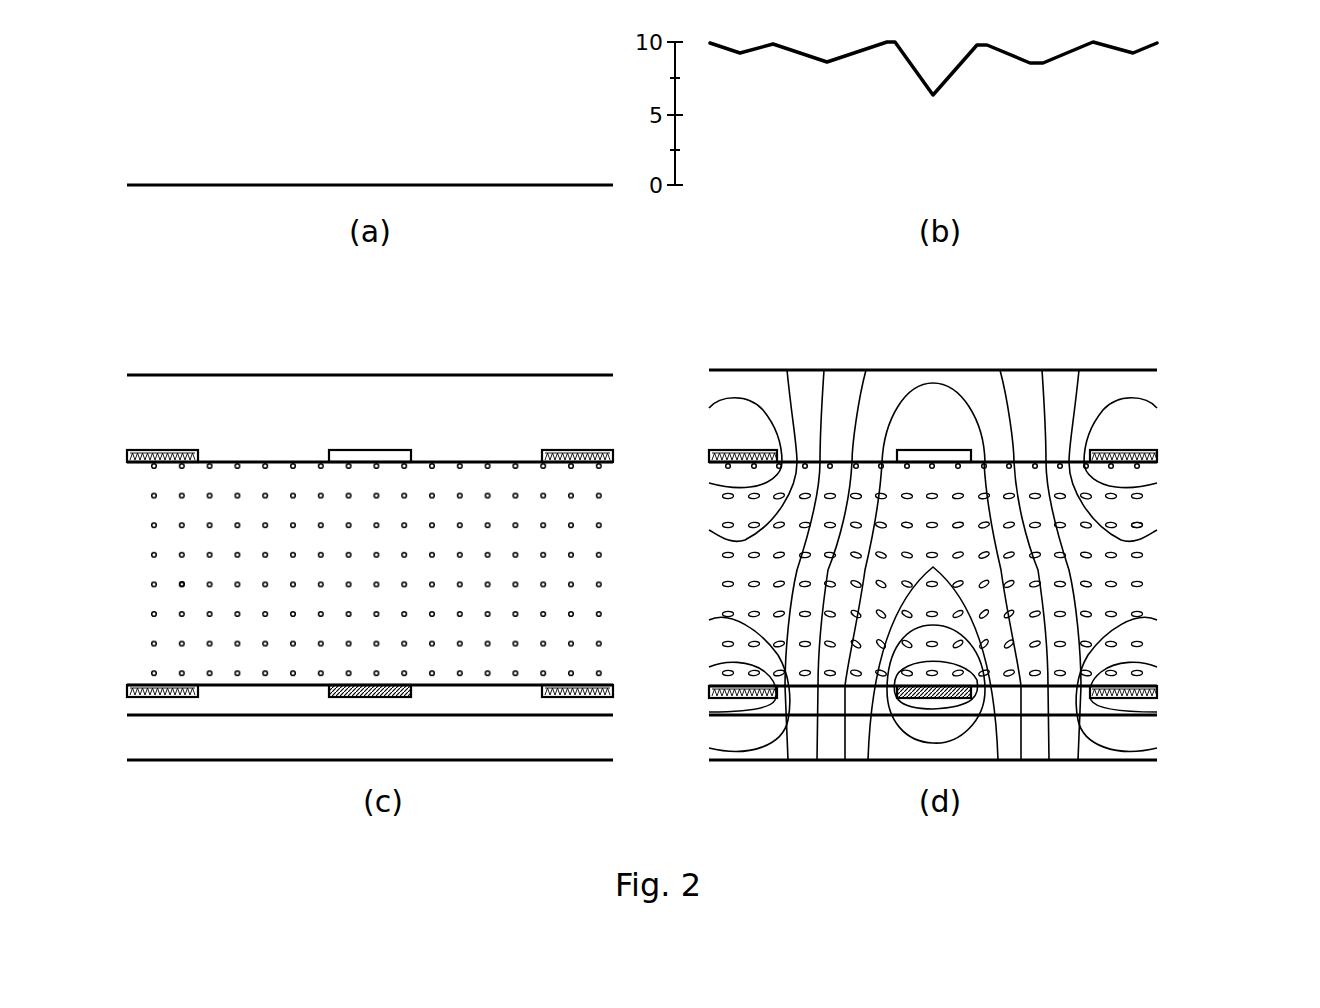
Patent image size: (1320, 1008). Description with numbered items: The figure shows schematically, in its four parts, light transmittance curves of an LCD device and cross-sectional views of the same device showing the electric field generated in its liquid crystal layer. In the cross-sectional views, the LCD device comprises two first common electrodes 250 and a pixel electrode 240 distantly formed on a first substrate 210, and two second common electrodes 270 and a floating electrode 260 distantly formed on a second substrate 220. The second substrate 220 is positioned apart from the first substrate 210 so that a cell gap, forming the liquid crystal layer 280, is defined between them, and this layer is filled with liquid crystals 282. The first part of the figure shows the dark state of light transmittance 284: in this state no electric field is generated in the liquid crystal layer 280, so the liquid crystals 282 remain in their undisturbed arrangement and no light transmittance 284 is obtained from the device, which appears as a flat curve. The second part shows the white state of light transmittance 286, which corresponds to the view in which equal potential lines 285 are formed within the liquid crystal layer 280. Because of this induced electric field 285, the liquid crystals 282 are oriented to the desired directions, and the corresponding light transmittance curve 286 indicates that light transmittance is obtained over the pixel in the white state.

The first substrate 210 is at (122, 685).
The second substrate 220 is at (100, 416).
The pixel electrode 240 is at (355, 700).
The first common electrode 250 is at (167, 700).
The floating electrode 260 is at (377, 456).
The second common electrode 270 is at (162, 456).
The liquid crystal layer 280 is at (110, 548).
The liquid crystal 282 is at (182, 585).
The light transmittance in dark state 284 is at (408, 185).
The equal potential lines 285 is at (858, 397).
The light transmittance in white state 286 is at (1037, 65).